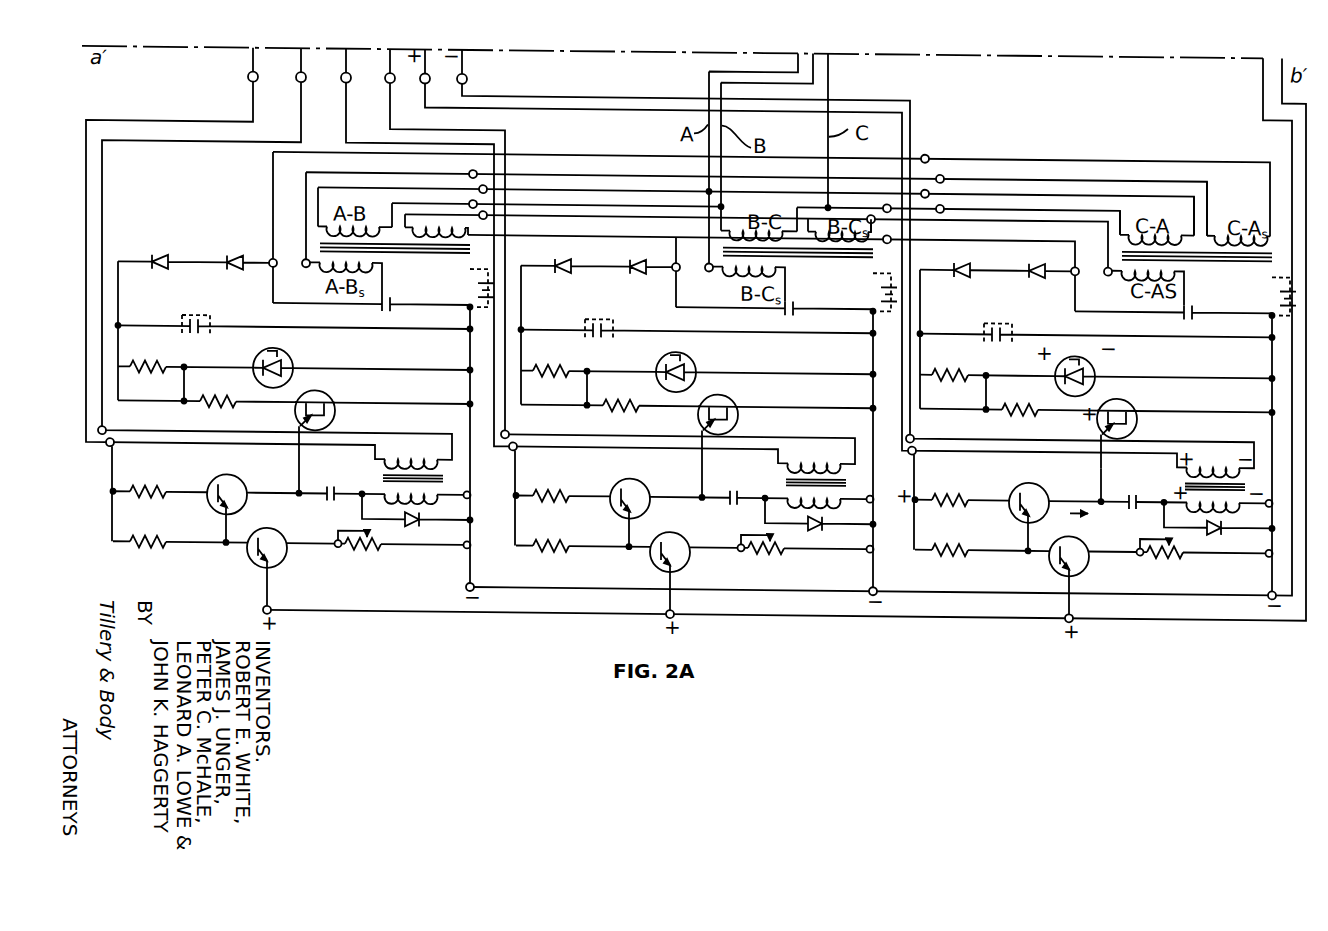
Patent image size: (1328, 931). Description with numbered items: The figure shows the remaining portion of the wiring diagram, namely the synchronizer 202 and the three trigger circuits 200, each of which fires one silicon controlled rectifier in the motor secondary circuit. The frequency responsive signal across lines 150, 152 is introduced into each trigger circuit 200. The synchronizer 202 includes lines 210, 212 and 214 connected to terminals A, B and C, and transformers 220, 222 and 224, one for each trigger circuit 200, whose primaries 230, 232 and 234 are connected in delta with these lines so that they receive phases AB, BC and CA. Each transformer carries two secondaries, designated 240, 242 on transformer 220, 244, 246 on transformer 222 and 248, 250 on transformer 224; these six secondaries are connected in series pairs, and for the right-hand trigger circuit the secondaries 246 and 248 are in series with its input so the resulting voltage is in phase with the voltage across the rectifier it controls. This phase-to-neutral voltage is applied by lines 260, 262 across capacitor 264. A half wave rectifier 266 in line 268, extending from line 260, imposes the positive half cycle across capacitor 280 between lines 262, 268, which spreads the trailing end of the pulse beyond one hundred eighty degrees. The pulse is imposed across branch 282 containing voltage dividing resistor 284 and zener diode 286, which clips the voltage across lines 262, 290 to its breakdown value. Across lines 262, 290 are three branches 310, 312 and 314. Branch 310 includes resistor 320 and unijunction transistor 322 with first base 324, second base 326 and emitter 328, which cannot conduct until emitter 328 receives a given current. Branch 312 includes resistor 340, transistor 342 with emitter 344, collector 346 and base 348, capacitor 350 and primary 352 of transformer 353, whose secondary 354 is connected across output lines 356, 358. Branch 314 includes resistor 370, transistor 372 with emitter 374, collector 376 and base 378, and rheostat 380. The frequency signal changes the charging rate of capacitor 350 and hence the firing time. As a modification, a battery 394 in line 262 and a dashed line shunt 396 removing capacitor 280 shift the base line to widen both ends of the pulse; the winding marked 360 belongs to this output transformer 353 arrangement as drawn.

The line 150 is at (1262, 87).
The line 152 is at (1272, 107).
The trigger circuit 200 is at (322, 537).
The synchronizer 202 is at (968, 145).
The line 210 is at (709, 68).
The line 212 is at (723, 88).
The line 214 is at (829, 84).
The transformer 220 is at (405, 253).
The transformer 222 is at (820, 253).
The transformer 224 is at (1215, 260).
The primary 230 is at (326, 230).
The primary 232 is at (732, 236).
The primary 234 is at (1180, 230).
The secondary 240 is at (376, 270).
The secondary 242 is at (452, 242).
The secondary 244 is at (733, 272).
The secondary 246 is at (855, 245).
The secondary 248 is at (1128, 278).
The secondary 250 is at (1225, 222).
The line 260 is at (1072, 260).
The line 262 is at (1274, 288).
The capacitor 264 is at (1182, 313).
The half wave rectifier 266 is at (990, 270).
The line 268 is at (925, 323).
The capacitor 280 is at (988, 332).
The branch 282 is at (1130, 364).
The voltage dividing resistor 284 is at (982, 347).
The zener diode 286 is at (1095, 372).
The line 290 is at (987, 382).
The branch 310 is at (1193, 402).
The branch 312 is at (1062, 487).
The branch 314 is at (1100, 547).
The resistor 320 is at (1017, 407).
The unijunction transistor 322 is at (1128, 427).
The first base 324 is at (1100, 418).
The second base 326 is at (1137, 408).
The emitter 328 is at (1108, 428).
The resistor 340 is at (957, 484).
The transistor 342 is at (1022, 474).
The emitter 344 is at (1062, 510).
The collector 346 is at (1020, 504).
The base 348 is at (1022, 532).
The capacitor 350 is at (1144, 513).
The primary 352 is at (1193, 497).
The transformer 353 is at (1242, 492).
The secondary 354 is at (1182, 480).
The line 356 is at (890, 101).
The line 358 is at (914, 106).
The output winding 360 is at (1225, 500).
The resistor 370 is at (935, 545).
The transistor 372 is at (1055, 577).
The emitter 374 is at (1082, 552).
The collector 376 is at (1053, 552).
The base 378 is at (1075, 584).
The rheostat 380 is at (1170, 559).
The battery 394 is at (1270, 310).
The dashed line shunt 396 is at (1004, 318).